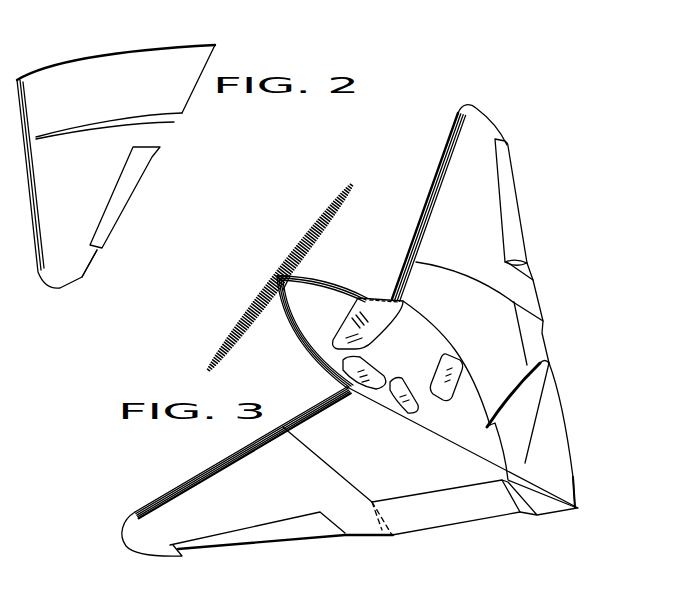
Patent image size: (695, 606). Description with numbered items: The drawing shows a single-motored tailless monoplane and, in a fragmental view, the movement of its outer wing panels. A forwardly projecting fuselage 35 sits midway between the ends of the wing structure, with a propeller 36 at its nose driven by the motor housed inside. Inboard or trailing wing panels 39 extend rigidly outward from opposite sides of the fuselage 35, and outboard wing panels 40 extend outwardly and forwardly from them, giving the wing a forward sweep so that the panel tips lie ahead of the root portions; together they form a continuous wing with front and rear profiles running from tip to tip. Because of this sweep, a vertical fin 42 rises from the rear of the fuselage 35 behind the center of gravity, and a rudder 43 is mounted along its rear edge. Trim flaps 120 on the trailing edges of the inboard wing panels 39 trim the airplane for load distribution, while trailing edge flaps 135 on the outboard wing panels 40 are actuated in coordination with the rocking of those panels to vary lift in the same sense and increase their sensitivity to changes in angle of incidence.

In FIG. 3, the fuselage 35 is at (317, 322).
In FIG. 3, the propeller 36 is at (248, 315).
In FIG. 2, the inboard wing panel 39 is at (102, 72).
In FIG. 3, the inboard wing panel 39 is at (430, 275).
In FIG. 2, the outboard wing panel 40 is at (77, 268).
In FIG. 3, the outboard wing panel 40 is at (462, 172).
In FIG. 3, the vertical fin 42 is at (527, 395).
In FIG. 3, the rudder 43 is at (550, 427).
In FIG. 3, the trailing edge wing flap 120 is at (535, 345).
In FIG. 2, the trailing edge flap 135 is at (133, 190).
In FIG. 3, the trailing edge flap 135 is at (508, 197).